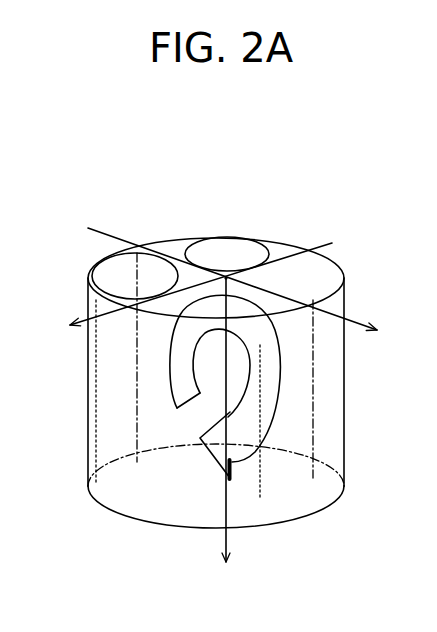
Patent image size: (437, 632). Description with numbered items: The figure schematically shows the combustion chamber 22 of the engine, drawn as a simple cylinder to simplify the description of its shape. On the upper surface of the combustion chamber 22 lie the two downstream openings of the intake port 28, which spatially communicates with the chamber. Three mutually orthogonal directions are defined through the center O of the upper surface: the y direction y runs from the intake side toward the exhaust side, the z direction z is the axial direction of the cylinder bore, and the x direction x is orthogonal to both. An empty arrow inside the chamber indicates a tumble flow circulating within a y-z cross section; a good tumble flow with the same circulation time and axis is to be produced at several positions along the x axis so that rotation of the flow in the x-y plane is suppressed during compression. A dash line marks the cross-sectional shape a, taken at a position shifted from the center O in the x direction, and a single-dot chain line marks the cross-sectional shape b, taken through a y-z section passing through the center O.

The combustion chamber 22 is at (163, 206).
The intake port 28 is at (97, 264).
The center O is at (226, 278).
The x direction x is at (189, 294).
The y direction y is at (244, 289).
The z direction z is at (226, 437).
The cross-sectional shape a is at (92, 445).
The cross-sectional shape b is at (137, 410).